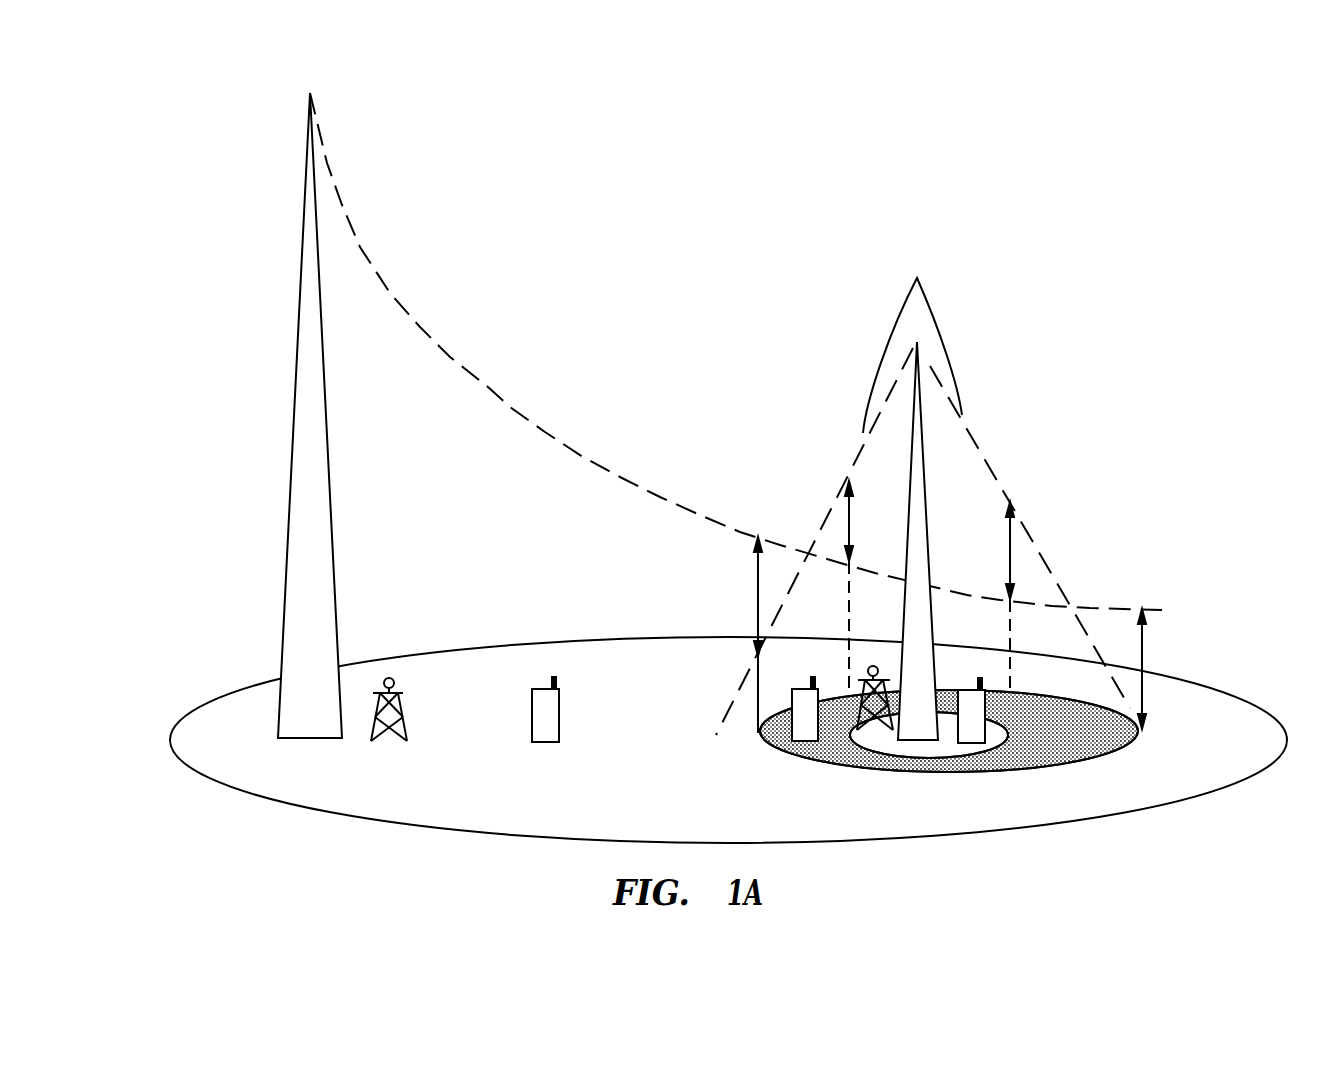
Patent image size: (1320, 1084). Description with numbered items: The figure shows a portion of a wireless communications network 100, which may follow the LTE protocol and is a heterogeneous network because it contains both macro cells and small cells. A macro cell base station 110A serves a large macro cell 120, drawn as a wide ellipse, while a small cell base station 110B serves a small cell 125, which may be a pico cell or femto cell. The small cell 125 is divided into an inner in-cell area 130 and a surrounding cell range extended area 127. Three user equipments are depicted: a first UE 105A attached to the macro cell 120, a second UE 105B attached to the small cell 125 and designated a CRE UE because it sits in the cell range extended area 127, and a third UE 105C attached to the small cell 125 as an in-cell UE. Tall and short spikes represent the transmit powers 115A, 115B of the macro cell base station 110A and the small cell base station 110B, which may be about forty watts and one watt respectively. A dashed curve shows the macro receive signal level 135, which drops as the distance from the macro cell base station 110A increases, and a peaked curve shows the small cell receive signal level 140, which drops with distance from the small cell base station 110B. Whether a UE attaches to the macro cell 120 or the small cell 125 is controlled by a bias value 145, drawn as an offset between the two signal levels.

The wireless communications network 100 is at (218, 152).
The first UE 105A is at (530, 723).
The second UE 105B is at (797, 723).
The third UE 105C is at (972, 692).
The macro cell base station 110A is at (407, 716).
The small cell base station 110B is at (870, 664).
The transmit power 115A is at (329, 481).
The transmit power 115B is at (925, 483).
The macro cell 120 is at (508, 826).
The small cell 125 is at (898, 773).
The cell range extended area 127 is at (949, 731).
The in-cell area 130 is at (958, 773).
The macro receive signal level 135 is at (373, 270).
The small cell receive signal level 140 is at (923, 462).
The bias value 145 is at (757, 597).